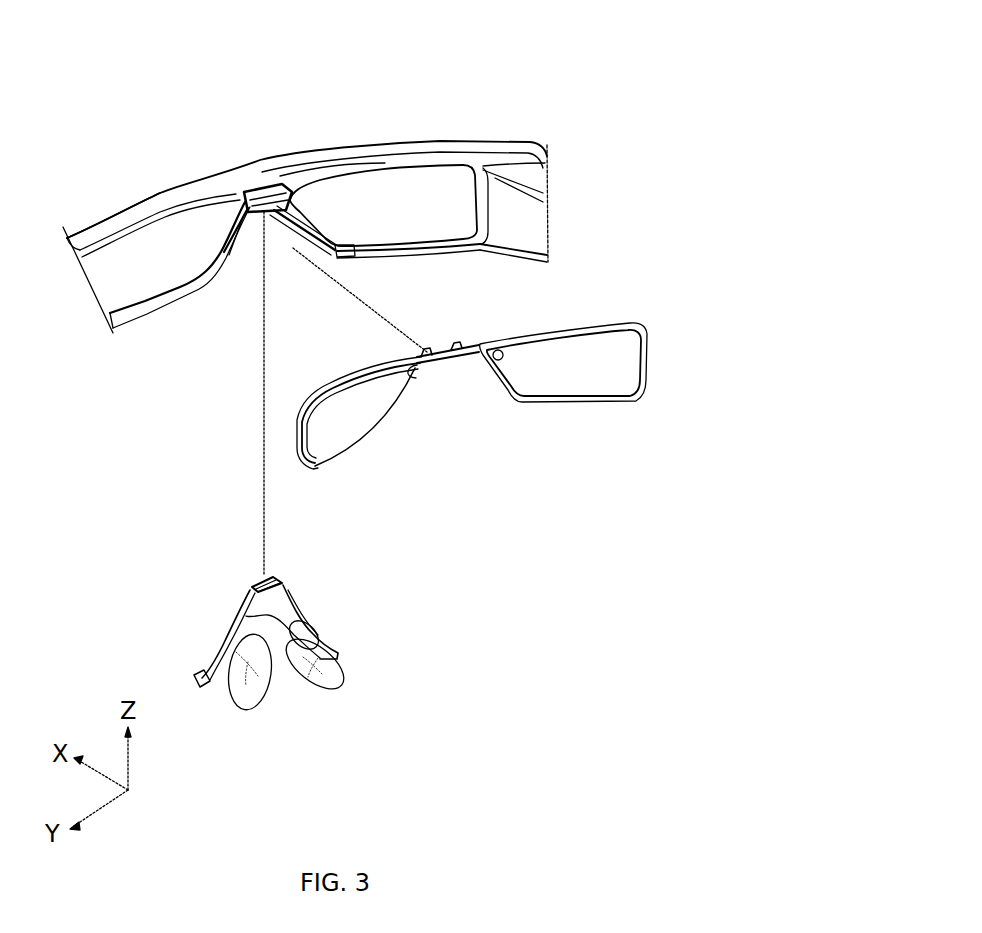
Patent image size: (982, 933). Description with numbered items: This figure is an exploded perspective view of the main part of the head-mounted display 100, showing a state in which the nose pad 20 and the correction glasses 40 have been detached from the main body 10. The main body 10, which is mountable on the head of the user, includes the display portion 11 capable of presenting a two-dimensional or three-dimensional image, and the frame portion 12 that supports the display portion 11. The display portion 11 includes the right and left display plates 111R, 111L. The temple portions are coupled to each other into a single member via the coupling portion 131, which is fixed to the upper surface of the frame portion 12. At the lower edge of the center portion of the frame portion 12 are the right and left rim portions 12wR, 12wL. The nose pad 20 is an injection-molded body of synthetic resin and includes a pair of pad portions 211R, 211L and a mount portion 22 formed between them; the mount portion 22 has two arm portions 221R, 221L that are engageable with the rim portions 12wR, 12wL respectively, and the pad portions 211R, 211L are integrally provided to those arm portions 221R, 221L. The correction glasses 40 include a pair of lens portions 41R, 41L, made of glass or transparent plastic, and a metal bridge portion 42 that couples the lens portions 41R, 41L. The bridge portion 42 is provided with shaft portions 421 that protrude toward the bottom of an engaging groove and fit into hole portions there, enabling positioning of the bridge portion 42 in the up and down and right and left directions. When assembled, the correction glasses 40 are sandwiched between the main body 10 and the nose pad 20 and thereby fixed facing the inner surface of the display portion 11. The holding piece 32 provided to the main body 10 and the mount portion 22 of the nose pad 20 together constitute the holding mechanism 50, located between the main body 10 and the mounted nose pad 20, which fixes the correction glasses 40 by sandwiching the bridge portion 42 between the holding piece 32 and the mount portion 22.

The head-mounted display 100 is at (607, 72).
The main body 10 is at (504, 133).
The display portion 11 is at (390, 86).
The display plate 111L is at (203, 225).
The display plate 111R is at (373, 207).
The frame portion 12 is at (447, 162).
The coupling portion 131 is at (113, 220).
The rim portion 12wL is at (233, 262).
The rim portion 12wR is at (292, 245).
The correction glasses 40 is at (637, 480).
The lens portion 41L is at (360, 433).
The lens portion 41R is at (560, 387).
The bridge portion 42 is at (447, 360).
The shaft portion 421 is at (452, 347).
The nose pad 20 is at (332, 693).
The holding mechanism 50 is at (198, 418).
The holding piece 32 is at (275, 215).
The mount portion 22 is at (246, 588).
The arm portion 221L is at (205, 670).
The arm portion 221R is at (331, 639).
The pad portion 211L is at (250, 700).
The pad portion 211R is at (340, 677).